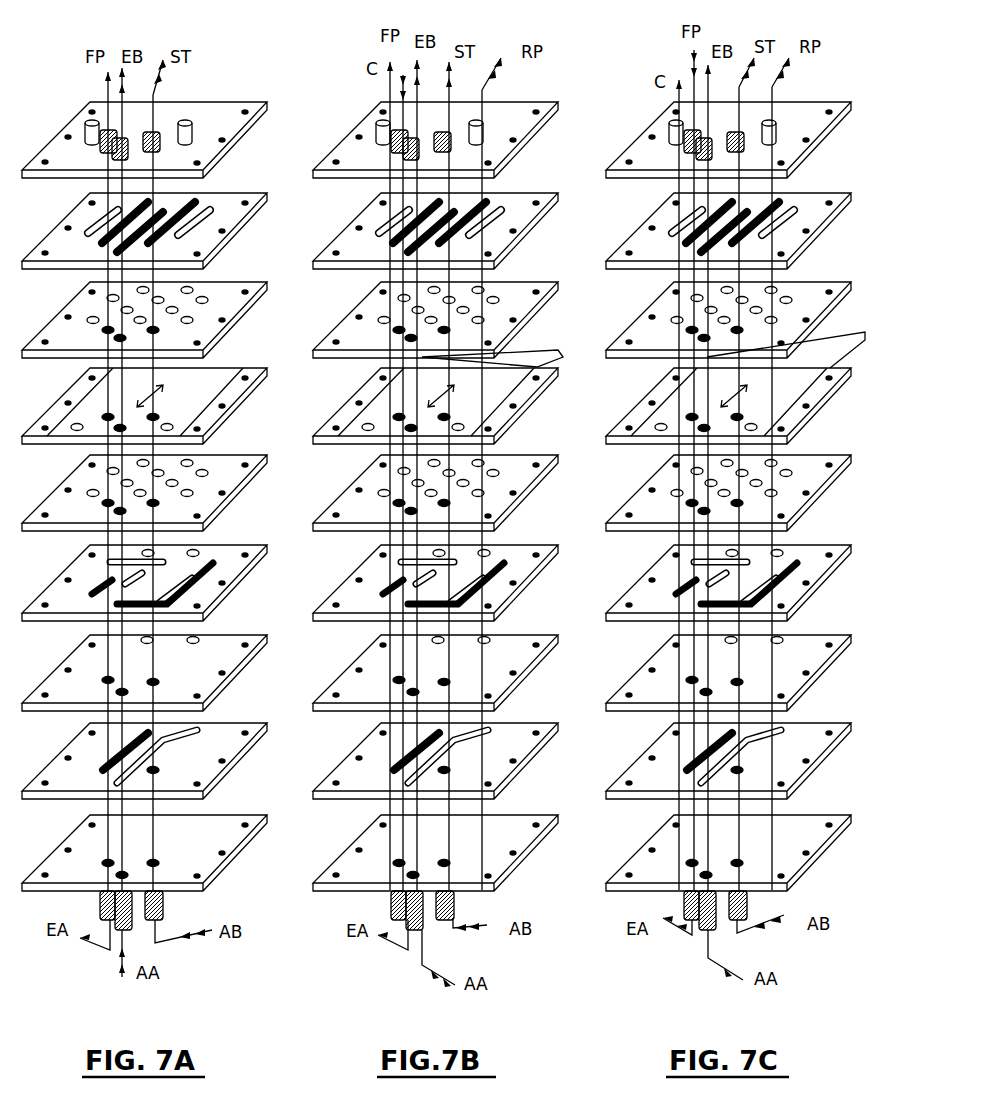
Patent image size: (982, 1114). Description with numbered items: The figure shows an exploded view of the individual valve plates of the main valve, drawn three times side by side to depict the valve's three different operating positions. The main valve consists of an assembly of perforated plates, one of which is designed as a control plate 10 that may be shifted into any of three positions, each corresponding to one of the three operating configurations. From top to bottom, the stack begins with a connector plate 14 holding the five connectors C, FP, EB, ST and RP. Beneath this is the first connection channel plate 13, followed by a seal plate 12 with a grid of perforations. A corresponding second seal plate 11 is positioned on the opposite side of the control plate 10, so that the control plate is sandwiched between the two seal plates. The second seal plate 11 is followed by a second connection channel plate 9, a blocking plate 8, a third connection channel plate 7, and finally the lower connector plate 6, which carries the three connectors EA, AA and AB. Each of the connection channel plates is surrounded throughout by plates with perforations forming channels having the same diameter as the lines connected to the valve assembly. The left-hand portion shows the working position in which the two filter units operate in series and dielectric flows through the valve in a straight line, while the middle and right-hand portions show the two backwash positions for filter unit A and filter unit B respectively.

The lower connector plate 6 is at (742, 872).
The third connection channel plate 7 is at (742, 761).
The blocking plate 8 is at (742, 673).
The second connection channel plate 9 is at (742, 584).
The control plate 10 is at (749, 388).
The second seal plate 11 is at (747, 493).
The seal plate 12 is at (748, 320).
The first connection channel plate 13 is at (747, 231).
The connector plate 14 is at (747, 140).